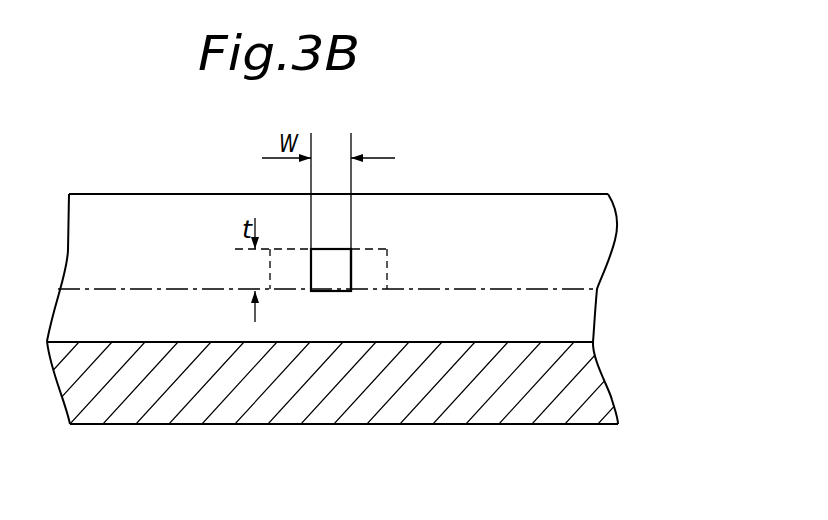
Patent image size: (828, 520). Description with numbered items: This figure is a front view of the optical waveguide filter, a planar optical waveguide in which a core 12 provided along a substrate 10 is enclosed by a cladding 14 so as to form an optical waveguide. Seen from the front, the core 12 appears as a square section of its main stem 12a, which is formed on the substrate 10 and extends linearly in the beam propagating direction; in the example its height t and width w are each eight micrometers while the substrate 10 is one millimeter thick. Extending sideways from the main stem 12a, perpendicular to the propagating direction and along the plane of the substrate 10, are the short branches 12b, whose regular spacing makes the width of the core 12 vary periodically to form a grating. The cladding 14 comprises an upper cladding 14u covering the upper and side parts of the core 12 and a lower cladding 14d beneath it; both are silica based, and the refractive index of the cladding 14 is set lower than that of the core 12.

The substrate 10 is at (605, 400).
The core 12 is at (340, 291).
The main stem 12a is at (322, 283).
The branches 12b is at (387, 249).
The cladding 14 is at (520, 215).
The upper cladding 14u is at (600, 237).
The lower cladding 14d is at (590, 322).